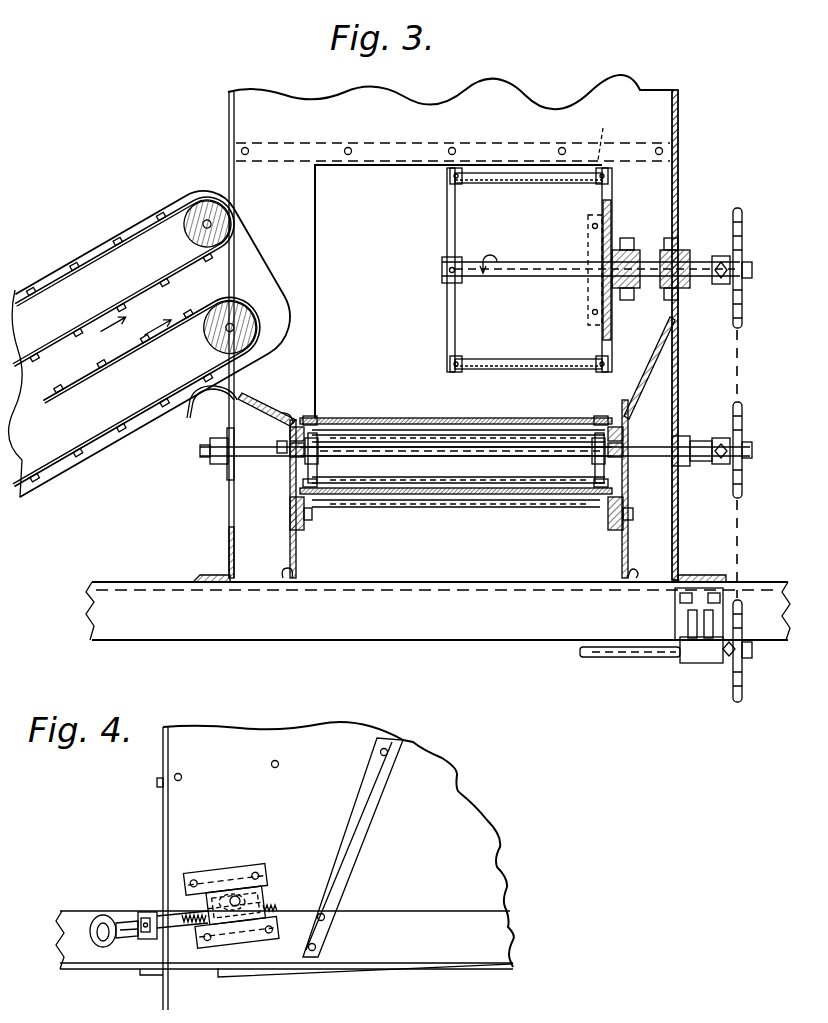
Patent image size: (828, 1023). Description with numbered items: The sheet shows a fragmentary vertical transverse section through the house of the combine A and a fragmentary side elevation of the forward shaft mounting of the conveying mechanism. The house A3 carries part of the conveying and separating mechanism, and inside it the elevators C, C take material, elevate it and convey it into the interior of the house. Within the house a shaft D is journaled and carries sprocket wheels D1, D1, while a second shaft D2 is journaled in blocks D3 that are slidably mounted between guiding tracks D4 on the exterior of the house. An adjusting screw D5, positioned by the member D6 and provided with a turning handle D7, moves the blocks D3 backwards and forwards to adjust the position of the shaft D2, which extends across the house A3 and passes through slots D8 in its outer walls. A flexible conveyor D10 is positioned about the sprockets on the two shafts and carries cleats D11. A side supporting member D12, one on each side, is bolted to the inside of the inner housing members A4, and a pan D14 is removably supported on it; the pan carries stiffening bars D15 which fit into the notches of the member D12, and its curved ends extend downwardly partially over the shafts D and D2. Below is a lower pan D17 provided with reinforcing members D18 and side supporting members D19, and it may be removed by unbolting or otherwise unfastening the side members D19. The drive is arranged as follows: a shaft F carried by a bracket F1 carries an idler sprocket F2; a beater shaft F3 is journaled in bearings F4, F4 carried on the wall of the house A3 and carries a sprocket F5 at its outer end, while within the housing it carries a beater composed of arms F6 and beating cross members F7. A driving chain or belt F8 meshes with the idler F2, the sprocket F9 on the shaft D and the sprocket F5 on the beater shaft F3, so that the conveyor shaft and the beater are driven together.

In FIG. 3, the combine A is at (585, 86).
In FIG. 3, the house A3 is at (680, 125).
In FIG. 4, the house A3 is at (455, 797).
In FIG. 3, the inner housing members A4 is at (292, 548).
In FIG. 3, the elevators C is at (80, 290).
In FIG. 3, the shaft D is at (200, 452).
In FIG. 3, the sprocket wheels D1 is at (306, 470).
In FIG. 4, the shaft D2 is at (262, 882).
In FIG. 4, the blocks D3 is at (265, 894).
In FIG. 4, the guiding tracks D4 is at (208, 876).
In FIG. 4, the adjusting screw D5 is at (176, 925).
In FIG. 4, the member D6 is at (150, 912).
In FIG. 4, the turning handle D7 is at (100, 918).
In FIG. 4, the slots D8 is at (237, 894).
In FIG. 3, the flexible conveyor D10 is at (320, 474).
In FIG. 3, the cleats D11 is at (416, 420).
In FIG. 3, the side supporting member D12 is at (295, 426).
In FIG. 3, the pan D14 is at (516, 418).
In FIG. 3, the stiffening bars D15 is at (436, 436).
In FIG. 3, the lower pan D17 is at (530, 498).
In FIG. 3, the reinforcing members D18 is at (470, 504).
In FIG. 3, the side supporting members D19 is at (308, 528).
In FIG. 3, the shaft F is at (640, 656).
In FIG. 3, the bracket F1 is at (704, 658).
In FIG. 3, the idler sprocket F2 is at (744, 692).
In FIG. 3, the beater shaft F3 is at (530, 270).
In FIG. 3, the bearings F4 is at (638, 262).
In FIG. 3, the sprocket F5 is at (740, 240).
In FIG. 3, the arms F6 is at (455, 230).
In FIG. 3, the beating cross members F7 is at (500, 175).
In FIG. 3, the driving chain or belt F8 is at (740, 350).
In FIG. 3, the sprocket F9 is at (745, 484).